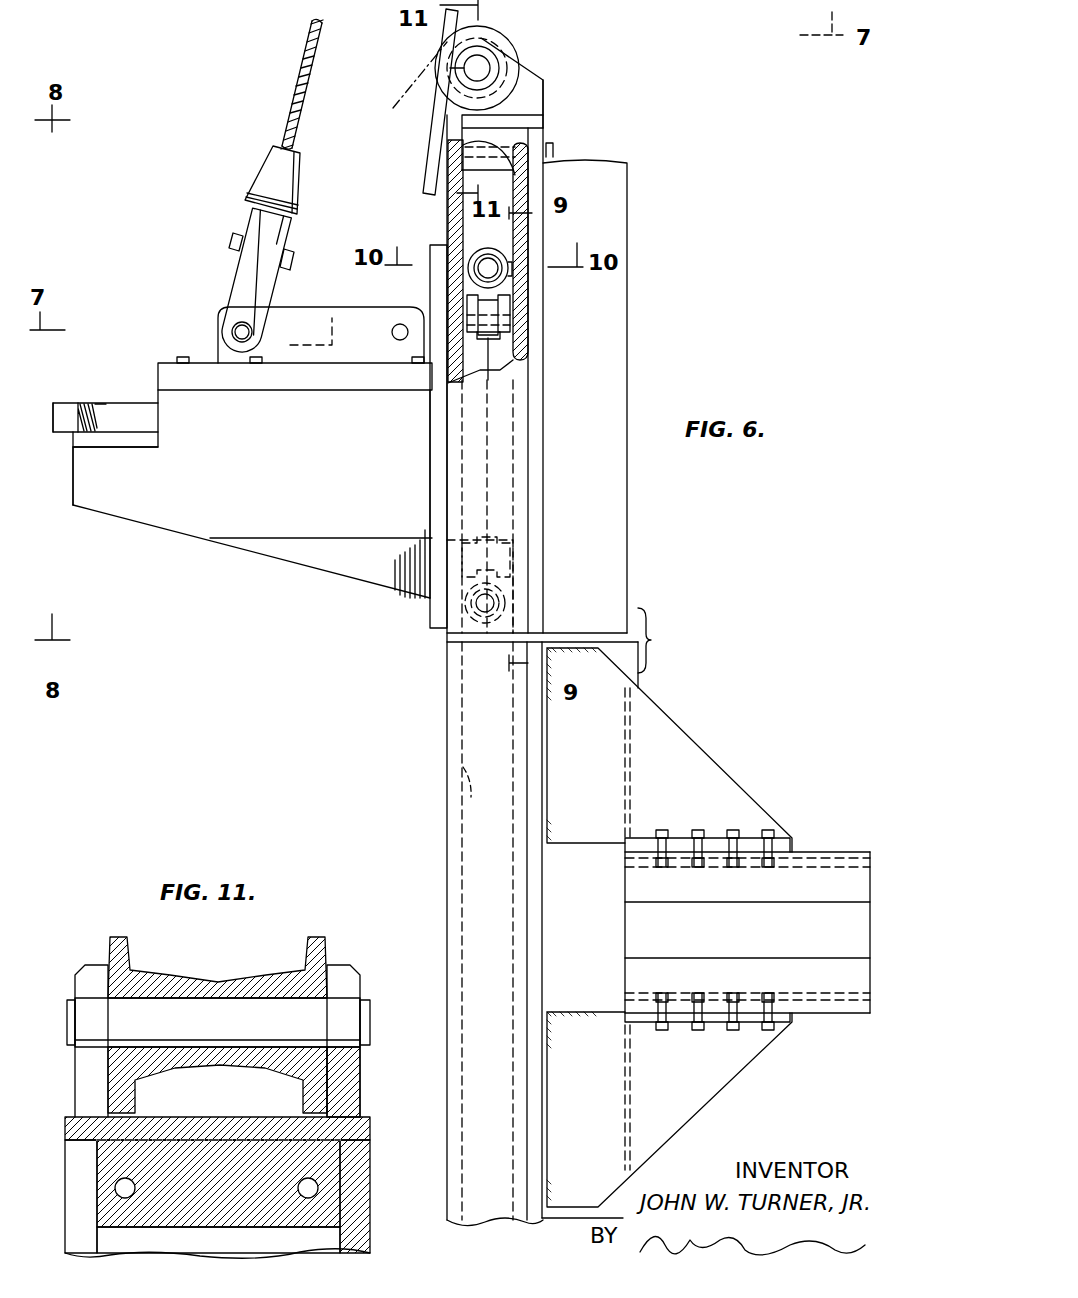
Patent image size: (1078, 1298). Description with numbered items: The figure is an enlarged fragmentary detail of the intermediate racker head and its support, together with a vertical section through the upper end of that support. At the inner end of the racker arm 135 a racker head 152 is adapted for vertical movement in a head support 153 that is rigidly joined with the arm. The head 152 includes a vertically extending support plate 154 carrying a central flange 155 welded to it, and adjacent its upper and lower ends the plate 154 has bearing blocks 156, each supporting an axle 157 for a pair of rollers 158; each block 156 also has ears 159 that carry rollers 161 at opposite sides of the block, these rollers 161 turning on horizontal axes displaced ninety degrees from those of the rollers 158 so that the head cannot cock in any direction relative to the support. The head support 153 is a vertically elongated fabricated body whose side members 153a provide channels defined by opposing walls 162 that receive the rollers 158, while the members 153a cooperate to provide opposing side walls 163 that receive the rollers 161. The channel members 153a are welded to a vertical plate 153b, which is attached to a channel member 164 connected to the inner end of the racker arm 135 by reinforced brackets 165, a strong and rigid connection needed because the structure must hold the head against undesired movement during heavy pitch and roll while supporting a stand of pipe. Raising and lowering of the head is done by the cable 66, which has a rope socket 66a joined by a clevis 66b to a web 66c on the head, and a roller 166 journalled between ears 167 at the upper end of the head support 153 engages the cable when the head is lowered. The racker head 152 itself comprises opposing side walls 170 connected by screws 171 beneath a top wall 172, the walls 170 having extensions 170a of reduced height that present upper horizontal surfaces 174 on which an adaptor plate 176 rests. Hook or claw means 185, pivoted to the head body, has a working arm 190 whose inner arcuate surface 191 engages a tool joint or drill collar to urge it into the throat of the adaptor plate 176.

In FIG. 6, the cable 66 is at (290, 85).
In FIG. 6, the rope socket 66a is at (290, 180).
In FIG. 6, the clevis 66b is at (242, 287).
In FIG. 6, the web 66c is at (285, 318).
In FIG. 6, the racker arm 135 is at (812, 851).
In FIG. 6, the racker head 152 is at (165, 531).
In FIG. 6, the head support 153 is at (447, 692).
In FIG. 11, the head support 153 is at (374, 1233).
In FIG. 6, the side members 153a is at (522, 470).
In FIG. 11, the side members 153a is at (355, 1155).
In FIG. 6, the vertical plate 153b is at (537, 530).
In FIG. 6, the support plate 154 is at (440, 627).
In FIG. 6, the central flange 155 is at (480, 360).
In FIG. 6, the bearing blocks 156 is at (465, 291).
In FIG. 6, the axle 157 is at (485, 258).
In FIG. 6, the rollers 158 is at (505, 280).
In FIG. 6, the ears 159 is at (505, 308).
In FIG. 6, the rollers 161 is at (497, 338).
In FIG. 6, the opposing walls 162 is at (513, 818).
In FIG. 11, the opposing walls 162 is at (260, 1245).
In FIG. 6, the opposing side walls 163 is at (498, 187).
In FIG. 11, the opposing side walls 163 is at (98, 1242).
In FIG. 6, the channel member 164 is at (617, 180).
In FIG. 6, the reinforced brackets 165 is at (710, 836).
In FIG. 6, the roller 166 is at (502, 42).
In FIG. 11, the roller 166 is at (268, 975).
In FIG. 6, the ears 167 is at (535, 93).
In FIG. 11, the ears 167 is at (88, 978).
In FIG. 6, the side walls 170 is at (251, 494).
In FIG. 6, the extensions 170a is at (100, 493).
In FIG. 6, the screws 171 is at (183, 356).
In FIG. 6, the top wall 172 is at (320, 382).
In FIG. 6, the upper horizontal surfaces 174 is at (82, 441).
In FIG. 6, the adaptor plate 176 is at (127, 438).
In FIG. 6, the hook or claw means 185 is at (81, 401).
In FIG. 6, the working arm 190 is at (101, 410).
In FIG. 6, the inner arcuate surface 191 is at (101, 402).